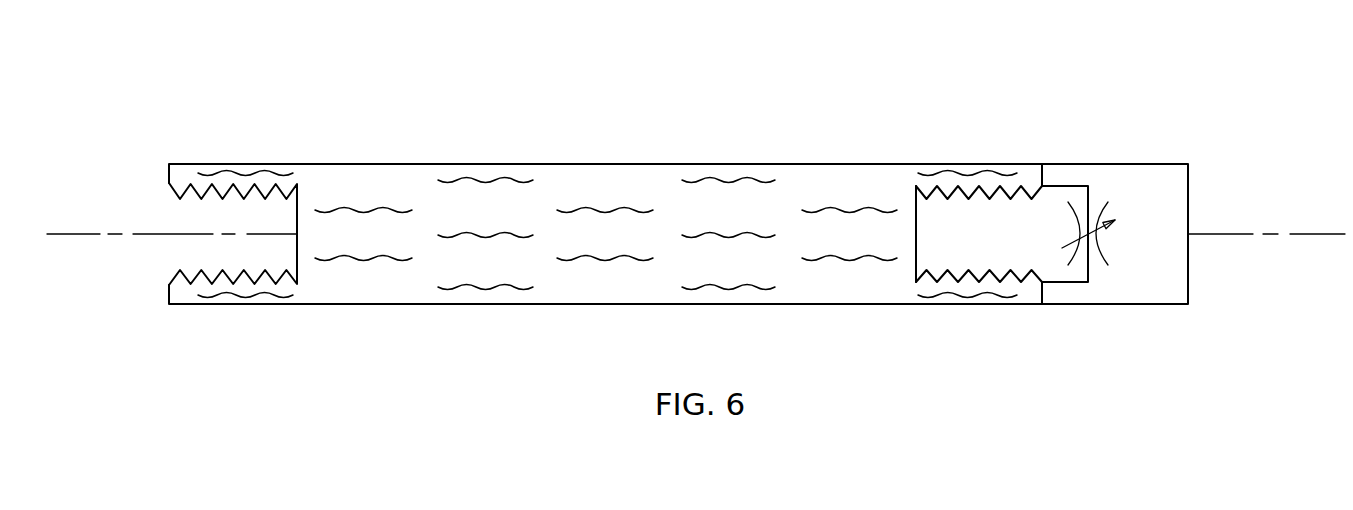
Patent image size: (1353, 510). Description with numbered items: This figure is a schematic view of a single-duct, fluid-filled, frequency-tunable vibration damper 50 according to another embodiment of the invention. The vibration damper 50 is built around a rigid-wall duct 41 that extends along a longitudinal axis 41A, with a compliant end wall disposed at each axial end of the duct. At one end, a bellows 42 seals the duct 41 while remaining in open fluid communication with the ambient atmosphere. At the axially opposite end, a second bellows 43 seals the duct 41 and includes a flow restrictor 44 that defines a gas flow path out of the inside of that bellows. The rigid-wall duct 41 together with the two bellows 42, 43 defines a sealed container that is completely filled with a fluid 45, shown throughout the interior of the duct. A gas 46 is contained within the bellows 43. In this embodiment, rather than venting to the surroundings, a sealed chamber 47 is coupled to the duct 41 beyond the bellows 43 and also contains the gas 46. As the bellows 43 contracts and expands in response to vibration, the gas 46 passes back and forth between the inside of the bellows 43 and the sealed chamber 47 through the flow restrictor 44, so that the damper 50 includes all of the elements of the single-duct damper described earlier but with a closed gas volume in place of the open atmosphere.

The vibration damper 50 is at (356, 94).
The rigid-wall duct 41 is at (463, 164).
The longitudinal axis 41A is at (82, 233).
The bellows 42 is at (190, 280).
The bellows 43 is at (1027, 281).
The flow restrictor 44 is at (1107, 262).
The fluid 45 is at (630, 208).
The gas 46 is at (1033, 217).
The sealed chamber 47 is at (1153, 164).